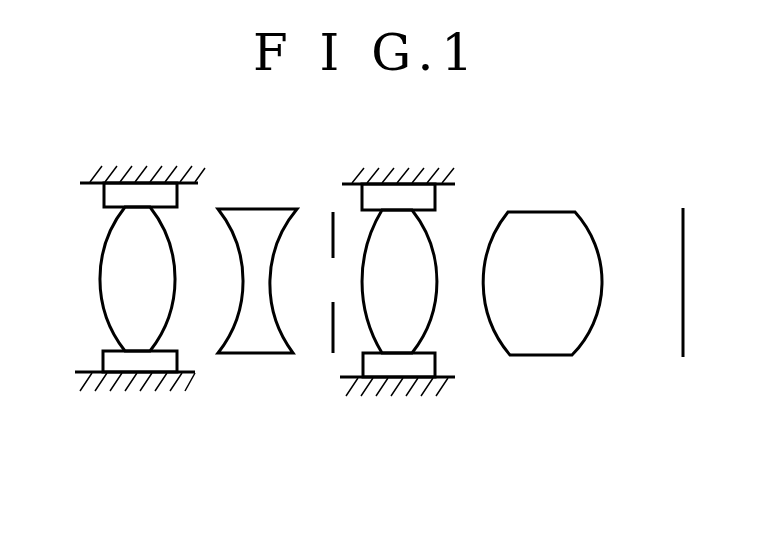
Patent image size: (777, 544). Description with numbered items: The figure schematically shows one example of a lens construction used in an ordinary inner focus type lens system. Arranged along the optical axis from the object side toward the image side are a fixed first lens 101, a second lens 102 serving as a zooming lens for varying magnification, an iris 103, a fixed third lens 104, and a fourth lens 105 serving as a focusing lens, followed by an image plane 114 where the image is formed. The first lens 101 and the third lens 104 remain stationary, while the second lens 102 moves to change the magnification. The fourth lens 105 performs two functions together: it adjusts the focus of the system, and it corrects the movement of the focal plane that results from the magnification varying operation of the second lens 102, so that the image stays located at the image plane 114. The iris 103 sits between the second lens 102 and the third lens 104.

The first lens 101 is at (108, 313).
The second lens 102 is at (236, 356).
The iris 103 is at (332, 330).
The third lens 104 is at (432, 311).
The fourth lens 105 is at (587, 338).
The image plane 114 is at (682, 233).